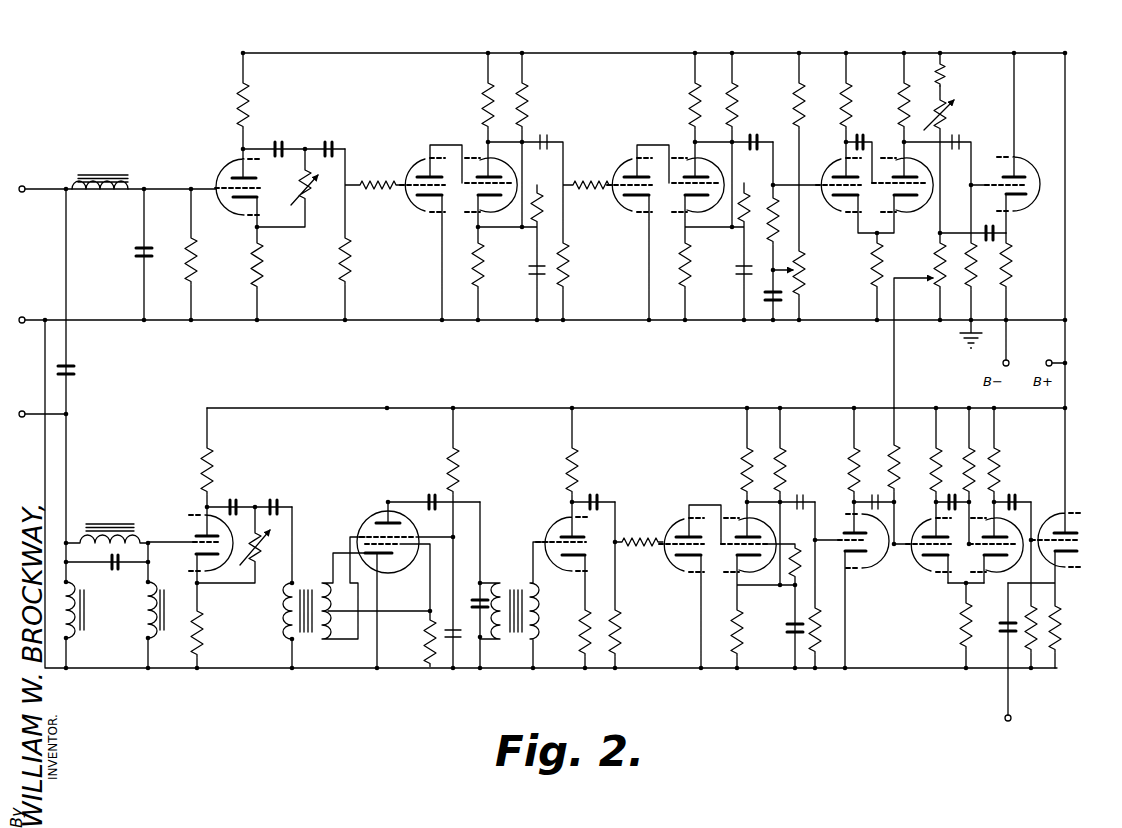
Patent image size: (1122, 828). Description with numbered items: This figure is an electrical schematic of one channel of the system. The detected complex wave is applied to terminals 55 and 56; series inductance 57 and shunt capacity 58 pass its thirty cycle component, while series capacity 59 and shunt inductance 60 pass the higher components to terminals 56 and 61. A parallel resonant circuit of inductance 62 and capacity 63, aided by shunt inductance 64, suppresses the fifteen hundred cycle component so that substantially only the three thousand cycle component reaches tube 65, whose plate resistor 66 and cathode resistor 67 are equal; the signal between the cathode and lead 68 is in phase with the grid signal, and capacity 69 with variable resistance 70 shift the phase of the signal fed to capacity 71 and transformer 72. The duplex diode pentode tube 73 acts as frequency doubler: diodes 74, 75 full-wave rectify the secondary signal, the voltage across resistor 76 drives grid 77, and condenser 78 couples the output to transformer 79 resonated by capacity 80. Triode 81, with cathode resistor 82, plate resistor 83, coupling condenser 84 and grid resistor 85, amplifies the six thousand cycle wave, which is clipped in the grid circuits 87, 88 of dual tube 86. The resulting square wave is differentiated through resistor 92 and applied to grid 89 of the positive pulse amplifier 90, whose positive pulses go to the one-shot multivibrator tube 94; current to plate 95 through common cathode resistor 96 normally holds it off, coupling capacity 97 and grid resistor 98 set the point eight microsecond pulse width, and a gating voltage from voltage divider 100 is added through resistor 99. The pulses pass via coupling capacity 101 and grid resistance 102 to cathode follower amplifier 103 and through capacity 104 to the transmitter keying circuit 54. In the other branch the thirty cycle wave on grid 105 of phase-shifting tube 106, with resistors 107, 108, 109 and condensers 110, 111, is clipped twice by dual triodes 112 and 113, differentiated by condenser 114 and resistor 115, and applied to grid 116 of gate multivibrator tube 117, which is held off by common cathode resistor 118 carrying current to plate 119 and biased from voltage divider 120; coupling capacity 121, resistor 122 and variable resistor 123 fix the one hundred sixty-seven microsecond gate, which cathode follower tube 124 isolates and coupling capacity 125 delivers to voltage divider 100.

The ultrahigh-frequency transmitter keying circuit 54 is at (1006, 720).
The terminal 55 is at (22, 185).
The terminal 56 is at (22, 316).
The series inductance 57 is at (102, 172).
The shunt capacity 58 is at (132, 253).
The series capacity 59 is at (76, 372).
The shunt inductance 60 is at (89, 629).
The terminal 61 is at (22, 411).
The inductance 62 is at (118, 522).
The capacity 63 is at (112, 568).
The shunt inductance 64 is at (176, 634).
The tube 65 is at (196, 502).
The plate resistor 66 is at (216, 463).
The cathode resistor 67 is at (206, 642).
The lead 68 is at (325, 668).
The capacity 69 is at (246, 496).
The variable resistance 70 is at (264, 580).
The capacity 71 is at (282, 504).
The transformer 72 is at (306, 582).
The duplex diode pentode vacuum tube 73 is at (372, 502).
The diode 74 is at (390, 561).
The diode 75 is at (364, 544).
The resistor 76 is at (426, 642).
The grid 77 is at (400, 554).
The condenser 78 is at (432, 494).
The transformer 79 is at (518, 580).
The capacity 80 is at (477, 615).
The triode vacuum tube 81 is at (568, 516).
The cathode resistor 82 is at (580, 634).
The plate resistor 83 is at (576, 468).
The coupling condenser 84 is at (600, 504).
The grid resistor 85 is at (621, 636).
The dual section high-gain vacuum tube 86 is at (730, 494).
The grid circuit 87 is at (637, 549).
The grid circuit 88 is at (793, 570).
The grid 89 is at (834, 538).
The positive pulse amplifier 90 is at (874, 558).
The resistor 92 is at (795, 624).
The one-shot multivibrator tube 94 is at (920, 514).
The plate 95 is at (1000, 532).
The common cathode resistor 96 is at (965, 629).
The coupling capacity 97 is at (955, 486).
The grid resistor 98 is at (967, 460).
The resistor 99 is at (896, 454).
The voltage divider 100 is at (938, 233).
The coupling capacity 101 is at (1017, 498).
The grid resistance 102 is at (1037, 643).
The cathode follower amplifier 103 is at (1070, 518).
The capacity 104 is at (1003, 633).
The grid 105 is at (236, 196).
The tube 106 is at (218, 163).
The resistor 107 is at (262, 270).
The resistor 108 is at (250, 102).
The resistor 109 is at (318, 218).
The condenser 110 is at (282, 144).
The condenser 111 is at (338, 145).
The dual high gain triode vacuum tube 112 is at (476, 132).
The dual high gain triode vacuum tube 113 is at (679, 134).
The condenser 114 is at (756, 135).
The resistor 115 is at (782, 234).
The grid 116 is at (832, 188).
The gate one-shot multivibrator tube 117 is at (840, 155).
The common cathode resistor 118 is at (940, 234).
The plate 119 is at (915, 182).
The voltage divider 120 is at (804, 270).
The coupling capacity 121 is at (866, 132).
The resistor 122 is at (948, 72).
The variable resistor 123 is at (948, 111).
The cathode follower tube 124 is at (1024, 156).
The coupling capacity 125 is at (1002, 232).